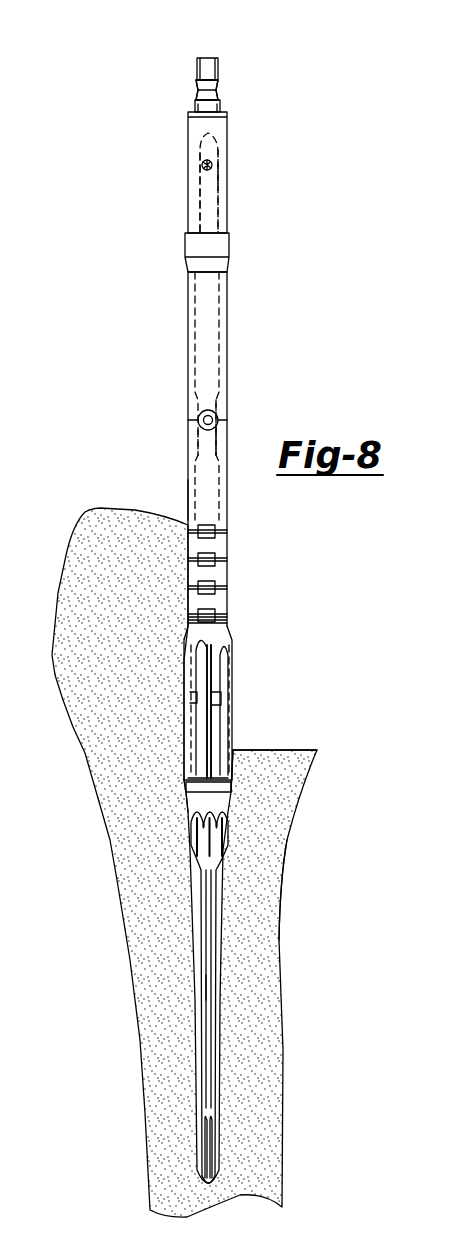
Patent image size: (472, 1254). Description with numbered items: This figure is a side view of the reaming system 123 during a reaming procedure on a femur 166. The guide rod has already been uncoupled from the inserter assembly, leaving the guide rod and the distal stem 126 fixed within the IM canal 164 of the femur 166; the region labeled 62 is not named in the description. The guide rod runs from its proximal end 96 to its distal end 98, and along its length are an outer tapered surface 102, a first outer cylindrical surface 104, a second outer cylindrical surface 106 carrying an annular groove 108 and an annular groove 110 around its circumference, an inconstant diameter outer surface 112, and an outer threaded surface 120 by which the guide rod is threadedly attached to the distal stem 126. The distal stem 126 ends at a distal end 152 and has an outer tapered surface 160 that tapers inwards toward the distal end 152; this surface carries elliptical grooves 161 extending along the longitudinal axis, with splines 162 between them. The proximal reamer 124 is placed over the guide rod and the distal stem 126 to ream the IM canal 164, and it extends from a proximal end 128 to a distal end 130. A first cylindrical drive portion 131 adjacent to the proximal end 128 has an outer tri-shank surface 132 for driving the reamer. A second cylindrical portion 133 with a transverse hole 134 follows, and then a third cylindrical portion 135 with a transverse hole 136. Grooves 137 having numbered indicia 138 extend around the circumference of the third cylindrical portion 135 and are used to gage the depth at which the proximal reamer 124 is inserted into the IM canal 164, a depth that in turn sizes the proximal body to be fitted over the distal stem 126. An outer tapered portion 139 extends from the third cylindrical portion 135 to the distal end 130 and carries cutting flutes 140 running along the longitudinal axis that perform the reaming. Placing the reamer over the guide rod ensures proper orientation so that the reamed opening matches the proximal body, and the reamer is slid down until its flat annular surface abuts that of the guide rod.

The bone 62 is at (187, 516).
The proximal end 96 is at (206, 148).
The distal end 98 is at (183, 737).
The outer tapered surface 102 is at (218, 172).
The first outer cylindrical surface 104 is at (200, 190).
The second outer cylindrical surface 106 is at (212, 340).
The annular groove 108 is at (222, 393).
The annular groove 110 is at (227, 420).
The inconstant diameter outer surface 112 is at (212, 500).
The outer threaded surface 120 is at (213, 706).
The reaming system 123 is at (251, 298).
The proximal reamer 124 is at (186, 501).
The distal stem 126 is at (184, 795).
The proximal end 128 is at (210, 58).
The distal end 130 is at (231, 780).
The first cylindrical drive portion 131 is at (196, 70).
The outer tri-shank surface 132 is at (218, 72).
The second cylindrical portion 133 is at (227, 140).
The hole 134 is at (203, 164).
The third cylindrical portion 135 is at (188, 313).
The hole 136 is at (200, 420).
The grooves 137 is at (188, 615).
The numbered indicia 138 is at (227, 615).
The outer tapered portion 139 is at (231, 648).
The cutting flutes 140 is at (213, 704).
The distal end 152 is at (207, 1187).
The outer tapered surface 160 is at (222, 913).
The elliptical grooves 161 is at (208, 948).
The splines 162 is at (210, 1070).
The IM canal 164 is at (213, 984).
The femur 166 is at (275, 1018).